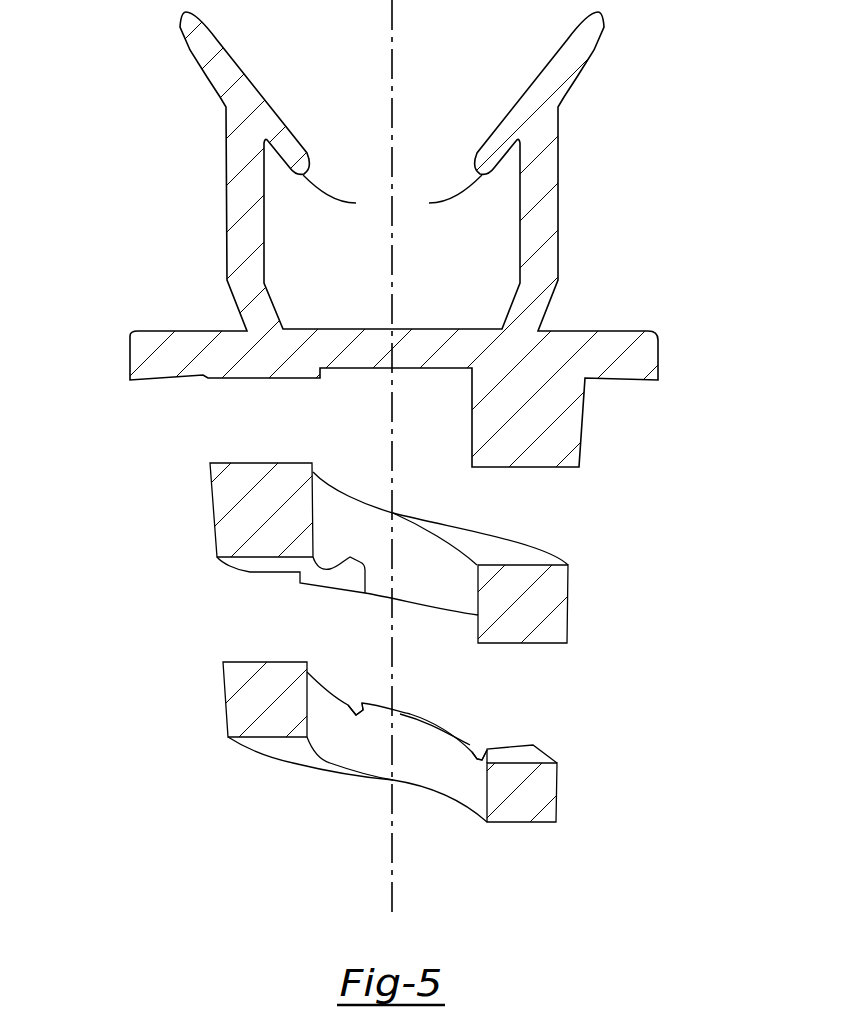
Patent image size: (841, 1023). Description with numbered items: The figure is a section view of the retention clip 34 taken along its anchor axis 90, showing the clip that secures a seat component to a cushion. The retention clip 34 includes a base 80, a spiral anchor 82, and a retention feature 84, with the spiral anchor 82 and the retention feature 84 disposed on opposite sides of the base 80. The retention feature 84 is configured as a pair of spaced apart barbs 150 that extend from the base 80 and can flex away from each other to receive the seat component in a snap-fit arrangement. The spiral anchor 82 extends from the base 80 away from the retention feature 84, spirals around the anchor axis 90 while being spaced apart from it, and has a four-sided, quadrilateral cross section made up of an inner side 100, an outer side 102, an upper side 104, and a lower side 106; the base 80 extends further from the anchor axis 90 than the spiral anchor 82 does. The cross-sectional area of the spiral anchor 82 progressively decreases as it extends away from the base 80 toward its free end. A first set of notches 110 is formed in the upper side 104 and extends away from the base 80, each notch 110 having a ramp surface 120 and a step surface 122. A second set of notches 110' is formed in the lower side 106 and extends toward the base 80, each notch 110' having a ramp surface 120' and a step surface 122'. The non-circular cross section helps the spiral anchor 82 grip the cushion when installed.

The retention clip 34 is at (420, 511).
The base 80 is at (131, 356).
The retention feature 84 is at (240, 62).
The barbs 150 is at (392, 194).
The spiral anchor 82 is at (274, 548).
The inner side 100 is at (313, 507).
The outer side 102 is at (210, 485).
The upper side 104 is at (233, 462).
The lower side 106 is at (250, 568).
The first set of notches 110 is at (484, 698).
The second set of notches 110' is at (401, 613).
The ramp surface 120 is at (510, 716).
The ramp surface 120' is at (375, 522).
The step surface 122 is at (413, 771).
The step surface 122' is at (295, 614).
The anchor axis 90 is at (390, 843).